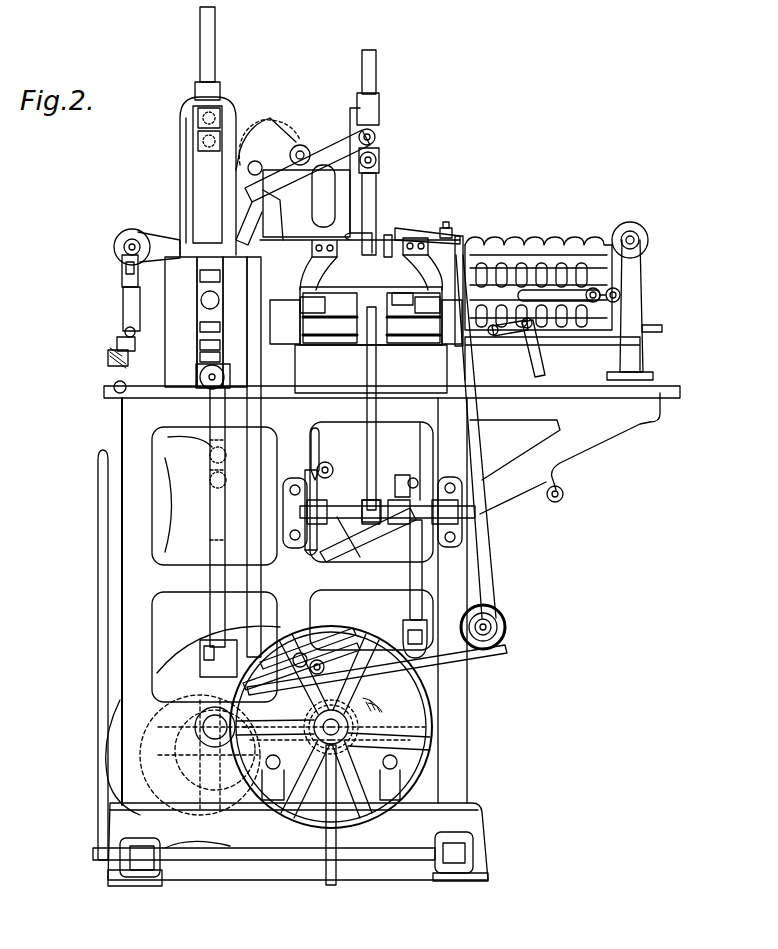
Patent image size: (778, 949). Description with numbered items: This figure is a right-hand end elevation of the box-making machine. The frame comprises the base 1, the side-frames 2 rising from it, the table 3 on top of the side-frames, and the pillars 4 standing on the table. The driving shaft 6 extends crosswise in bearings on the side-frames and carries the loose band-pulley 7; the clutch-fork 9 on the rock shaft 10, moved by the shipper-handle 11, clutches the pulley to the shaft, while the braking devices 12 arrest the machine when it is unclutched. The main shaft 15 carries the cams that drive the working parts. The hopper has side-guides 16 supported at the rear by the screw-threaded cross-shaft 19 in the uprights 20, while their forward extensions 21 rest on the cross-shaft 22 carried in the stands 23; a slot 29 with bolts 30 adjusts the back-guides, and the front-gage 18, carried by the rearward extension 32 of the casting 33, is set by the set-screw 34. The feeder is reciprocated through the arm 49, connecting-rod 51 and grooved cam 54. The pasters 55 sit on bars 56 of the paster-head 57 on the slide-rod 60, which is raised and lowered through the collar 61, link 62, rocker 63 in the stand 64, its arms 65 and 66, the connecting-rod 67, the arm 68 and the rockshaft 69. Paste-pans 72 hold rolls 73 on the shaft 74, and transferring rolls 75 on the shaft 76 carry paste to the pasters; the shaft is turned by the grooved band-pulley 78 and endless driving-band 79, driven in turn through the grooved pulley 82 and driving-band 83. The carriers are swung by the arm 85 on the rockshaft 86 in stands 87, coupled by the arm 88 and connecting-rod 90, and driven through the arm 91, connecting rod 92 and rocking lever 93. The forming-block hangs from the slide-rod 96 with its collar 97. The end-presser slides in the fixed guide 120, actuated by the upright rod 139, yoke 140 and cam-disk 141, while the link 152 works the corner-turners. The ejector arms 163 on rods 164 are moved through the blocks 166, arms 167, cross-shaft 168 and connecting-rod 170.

The base 1 is at (488, 822).
The side-frames 2 is at (118, 430).
The table 3 is at (102, 392).
The pillars 4 is at (206, 322).
The driving shaft 6 is at (322, 736).
The band-pulley 7 is at (435, 730).
The clutch-fork 9 is at (326, 866).
The rock shaft 10 is at (245, 862).
The shipper-handle 11 is at (98, 648).
The braking devices 12 is at (378, 700).
The main shaft 15 is at (205, 720).
The side-guides 16 is at (512, 238).
The front-gage 18 is at (464, 240).
The cross-shaft 19 is at (645, 235).
The uprights 20 is at (640, 322).
The forward extensions 21 is at (118, 270).
The cross-shaft 22 is at (115, 250).
The stands 23 is at (158, 250).
The slot 29 is at (540, 290).
The bolts 30 is at (620, 297).
The rearward extension 32 is at (415, 232).
The casting 33 is at (320, 224).
The set-screw 34 is at (448, 226).
The arm 49 is at (418, 445).
The connecting-rod 51 is at (384, 600).
The grooved cam 54 is at (114, 735).
The pasters 55 is at (318, 296).
The bars 56 is at (360, 264).
The paster-head 57 is at (380, 252).
The slide-rod 60 is at (375, 193).
The collar 61 is at (382, 165).
The link 62 is at (372, 135).
The rocker 63 is at (300, 145).
The stand 64 is at (182, 212).
The rearwardly-projecting arm 65 is at (324, 132).
The forwardly-projecting arm 66 is at (268, 132).
The connecting-rod 67 is at (266, 410).
The forwardly-projecting arm 68 is at (272, 640).
The rockshaft 69 is at (330, 645).
The paste-pans 72 is at (378, 395).
The rolls 73 is at (371, 369).
The shaft 74 is at (350, 325).
The transferring paste-rolls 75 is at (322, 330).
The shaft 76 is at (404, 297).
The grooved band-pulley 78 is at (448, 600).
The endless driving-band 79 is at (500, 546).
The grooved pulley 82 is at (505, 620).
The driving-band 83 is at (432, 668).
The swinging arm 85 is at (400, 330).
The rockshaft 86 is at (345, 504).
The stands 87 is at (282, 508).
The arm 88 is at (322, 460).
The connecting-rod 90 is at (312, 552).
The arm 91 is at (396, 480).
The connecting rod 92 is at (408, 572).
The rocking lever 93 is at (322, 664).
The slide-rod 96 is at (213, 38).
The collar 97 is at (197, 140).
The fixed guide 120 is at (196, 386).
The upright rod 139 is at (208, 580).
The yoke 140 is at (195, 760).
The cam-disk 141 is at (136, 851).
The link 152 is at (128, 300).
The arms 163 is at (525, 340).
The rods 164 is at (668, 329).
The blocks 166 is at (492, 336).
The arms 167 is at (565, 453).
The cross-shaft 168 is at (565, 495).
The connecting-rod 170 is at (368, 536).